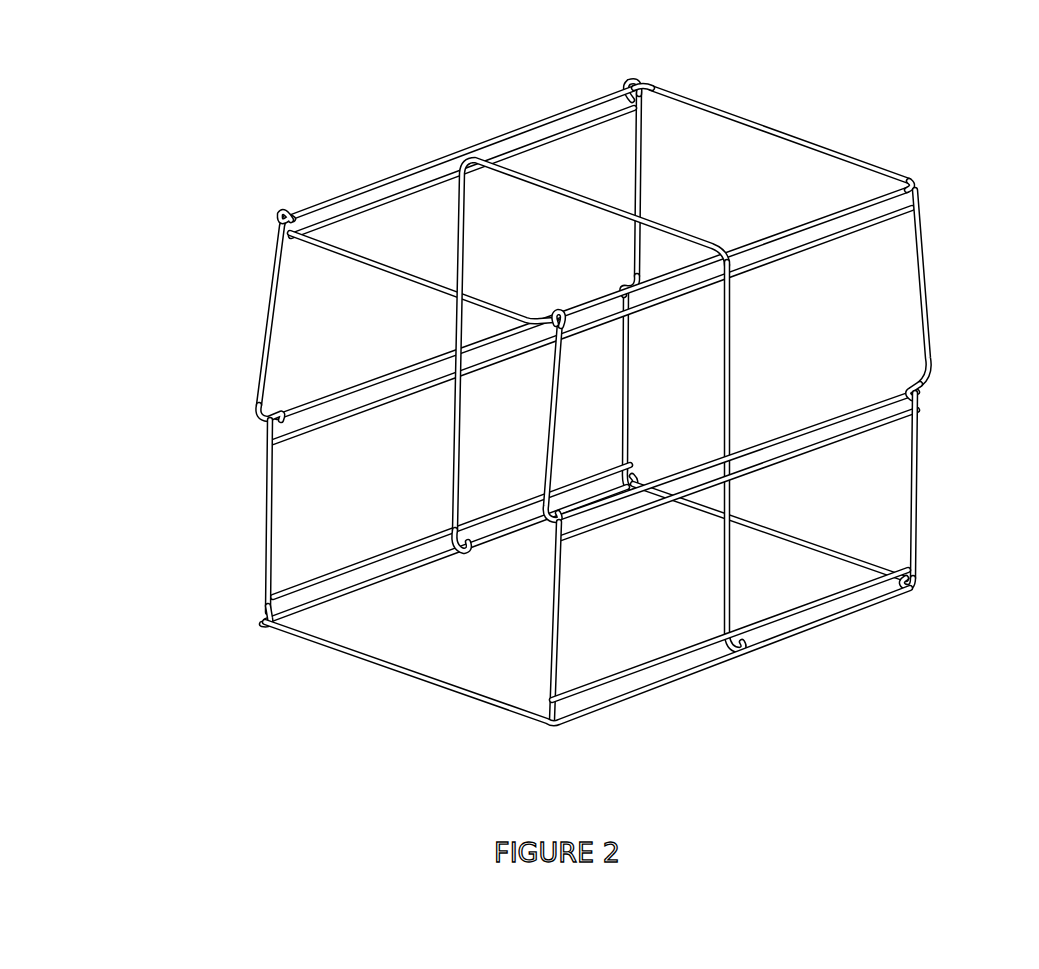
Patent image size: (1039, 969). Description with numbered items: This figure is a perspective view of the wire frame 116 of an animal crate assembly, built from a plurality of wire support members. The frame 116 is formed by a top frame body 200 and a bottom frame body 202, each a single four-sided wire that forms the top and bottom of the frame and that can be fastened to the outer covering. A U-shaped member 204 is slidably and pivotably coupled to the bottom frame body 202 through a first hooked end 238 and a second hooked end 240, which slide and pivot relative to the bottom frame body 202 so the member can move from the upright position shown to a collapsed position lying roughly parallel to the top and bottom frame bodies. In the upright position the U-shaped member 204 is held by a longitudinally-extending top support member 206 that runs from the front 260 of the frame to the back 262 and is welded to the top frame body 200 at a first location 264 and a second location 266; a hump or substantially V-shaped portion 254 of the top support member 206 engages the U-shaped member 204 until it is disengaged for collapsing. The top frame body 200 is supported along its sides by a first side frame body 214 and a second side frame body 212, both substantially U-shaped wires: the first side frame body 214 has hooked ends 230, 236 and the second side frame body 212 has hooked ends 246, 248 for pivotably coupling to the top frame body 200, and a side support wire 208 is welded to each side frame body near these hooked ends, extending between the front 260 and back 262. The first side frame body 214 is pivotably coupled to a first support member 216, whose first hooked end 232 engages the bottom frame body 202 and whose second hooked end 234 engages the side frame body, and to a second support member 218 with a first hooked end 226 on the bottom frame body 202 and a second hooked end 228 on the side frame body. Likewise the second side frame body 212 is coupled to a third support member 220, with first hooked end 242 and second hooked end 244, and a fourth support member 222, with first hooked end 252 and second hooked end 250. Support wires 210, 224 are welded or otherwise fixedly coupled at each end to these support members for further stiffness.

The frame 116 is at (568, 403).
The top frame body 200 is at (637, 262).
The bottom frame body 202 is at (611, 567).
The U-shaped member 204 is at (731, 342).
The top support member 206 is at (706, 175).
The side support wire 208 is at (516, 157).
The support wire 210 is at (378, 553).
The second side frame body 212 is at (263, 318).
The first side frame body 214 is at (931, 242).
The first support member 216 is at (930, 465).
The second support member 218 is at (561, 615).
The third support member 220 is at (263, 469).
The fourth support member 222 is at (634, 266).
The support wire 224 is at (359, 410).
The first hooked end 226 is at (557, 729).
The second hooked end 228 is at (581, 393).
The hooked end 230 is at (562, 312).
The first hooked end 232 is at (914, 590).
The second hooked end 234 is at (912, 385).
The hooked end 236 is at (922, 182).
The first hooked end 238 is at (746, 656).
The second hooked end 240 is at (461, 560).
The first hooked end 242 is at (278, 622).
The second hooked end 244 is at (284, 402).
The hooked end 246 is at (282, 214).
The hooked end 248 is at (631, 82).
The second hooked end 250 is at (627, 280).
The first hooked end 252 is at (634, 478).
The V-shaped portion 254 is at (593, 431).
The front 260 is at (261, 406).
The back 262 is at (932, 405).
The first location 264 is at (366, 303).
The second location 266 is at (797, 127).